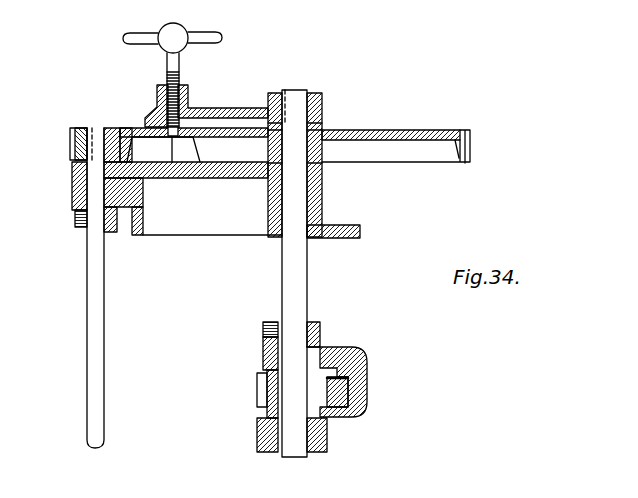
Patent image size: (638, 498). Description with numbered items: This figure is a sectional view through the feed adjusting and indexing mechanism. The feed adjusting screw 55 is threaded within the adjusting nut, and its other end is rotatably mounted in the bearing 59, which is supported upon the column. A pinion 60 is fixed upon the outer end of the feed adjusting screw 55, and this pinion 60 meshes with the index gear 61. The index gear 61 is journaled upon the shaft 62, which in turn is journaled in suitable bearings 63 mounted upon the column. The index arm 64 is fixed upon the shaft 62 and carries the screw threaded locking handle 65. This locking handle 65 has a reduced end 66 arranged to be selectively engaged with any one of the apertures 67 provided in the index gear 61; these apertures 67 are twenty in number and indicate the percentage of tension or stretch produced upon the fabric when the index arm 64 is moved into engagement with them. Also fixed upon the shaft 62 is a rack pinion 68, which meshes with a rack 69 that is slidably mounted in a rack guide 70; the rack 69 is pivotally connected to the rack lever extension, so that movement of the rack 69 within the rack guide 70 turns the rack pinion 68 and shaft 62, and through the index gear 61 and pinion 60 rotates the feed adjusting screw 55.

The feed adjusting screw 55 is at (92, 318).
The bearing 59 is at (73, 183).
The pinion 60 is at (80, 127).
The index gear 61 is at (430, 130).
The shaft 62 is at (281, 258).
The bearings 63 is at (323, 192).
The index arm 64 is at (232, 107).
The screw threaded locking handle 65 is at (166, 63).
The reduced end 66 is at (172, 138).
The apertures 67 is at (185, 138).
The rack pinion 68 is at (259, 392).
The rack 69 is at (367, 388).
The rack guide 70 is at (362, 352).